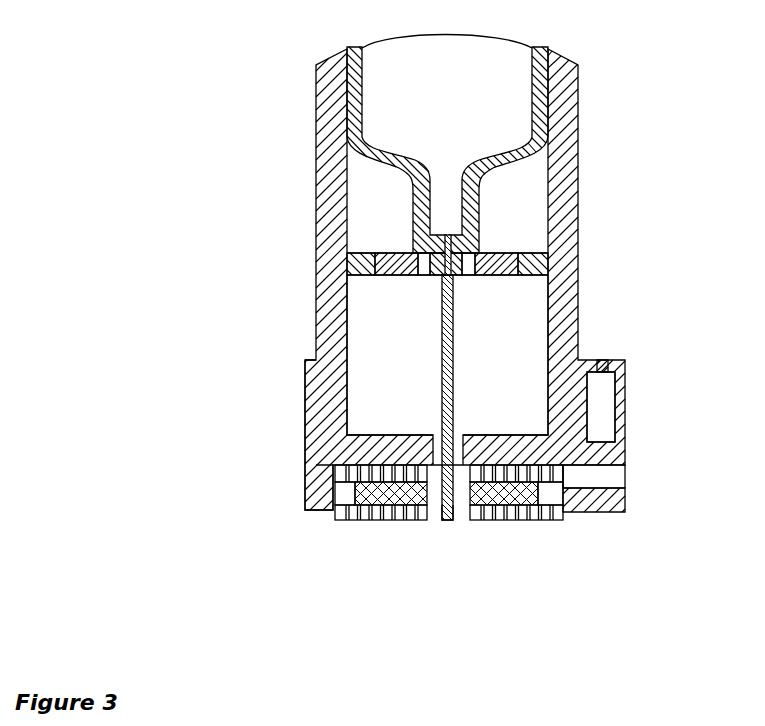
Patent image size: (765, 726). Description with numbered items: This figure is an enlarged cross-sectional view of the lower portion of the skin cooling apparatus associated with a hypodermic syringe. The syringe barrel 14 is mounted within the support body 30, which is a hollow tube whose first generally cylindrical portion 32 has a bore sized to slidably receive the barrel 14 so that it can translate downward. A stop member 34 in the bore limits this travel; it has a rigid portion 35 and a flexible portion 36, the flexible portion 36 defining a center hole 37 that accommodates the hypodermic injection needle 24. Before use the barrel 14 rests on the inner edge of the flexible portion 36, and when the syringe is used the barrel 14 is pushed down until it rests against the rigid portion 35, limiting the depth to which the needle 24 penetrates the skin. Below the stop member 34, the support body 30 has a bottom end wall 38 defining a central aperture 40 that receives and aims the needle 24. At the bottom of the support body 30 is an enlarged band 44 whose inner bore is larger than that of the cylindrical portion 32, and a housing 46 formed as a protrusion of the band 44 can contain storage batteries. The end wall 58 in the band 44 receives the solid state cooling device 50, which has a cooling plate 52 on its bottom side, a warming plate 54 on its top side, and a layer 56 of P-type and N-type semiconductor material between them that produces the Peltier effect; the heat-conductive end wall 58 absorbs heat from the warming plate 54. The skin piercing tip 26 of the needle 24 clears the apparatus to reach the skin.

The syringe barrel 14 is at (362, 48).
The hypodermic injection needle 24 is at (453, 353).
The skin piercing tip 26 is at (455, 512).
The support body 30 is at (517, 280).
The first generally cylindrical portion 32 is at (578, 150).
The stop member 34 is at (454, 224).
The rigid portion 35 is at (400, 253).
The flexible portion 36 is at (347, 254).
The center hole 37 is at (463, 275).
The bottom end wall 38 is at (412, 435).
The central aperture 40 is at (455, 435).
The enlarged band 44 is at (317, 408).
The housing 46 is at (618, 410).
The solid state cooling device 50 is at (463, 522).
The cooling plate 52 is at (347, 506).
The warming plate 54 is at (347, 476).
The layer of semiconductor material 56 is at (545, 485).
The end wall 58 is at (614, 484).